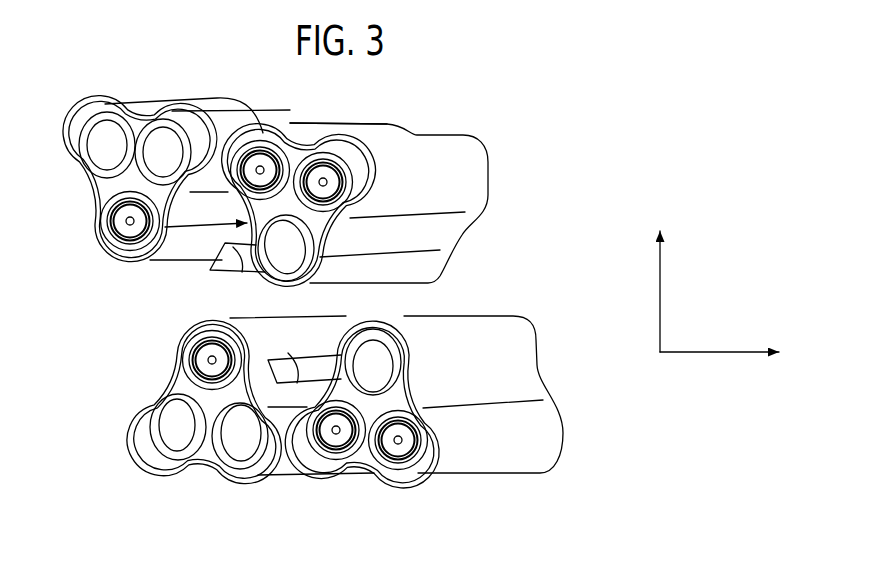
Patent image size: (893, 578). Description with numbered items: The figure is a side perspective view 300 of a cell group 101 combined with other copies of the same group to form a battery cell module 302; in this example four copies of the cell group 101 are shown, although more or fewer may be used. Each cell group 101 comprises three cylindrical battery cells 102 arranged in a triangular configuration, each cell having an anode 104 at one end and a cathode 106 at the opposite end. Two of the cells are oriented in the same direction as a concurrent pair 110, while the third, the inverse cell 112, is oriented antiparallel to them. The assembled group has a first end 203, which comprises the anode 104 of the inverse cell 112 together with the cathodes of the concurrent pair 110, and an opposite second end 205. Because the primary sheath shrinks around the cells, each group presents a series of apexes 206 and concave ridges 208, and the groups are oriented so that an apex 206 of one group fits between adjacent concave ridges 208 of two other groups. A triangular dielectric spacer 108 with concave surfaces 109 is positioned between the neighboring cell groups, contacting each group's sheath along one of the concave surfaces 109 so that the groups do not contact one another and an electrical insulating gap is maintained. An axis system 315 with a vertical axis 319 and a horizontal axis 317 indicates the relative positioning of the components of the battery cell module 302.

The cell group 101 is at (323, 290).
The battery cells 102 is at (133, 147).
The anode 104 is at (112, 221).
The cathode 106 is at (84, 135).
The dielectric spacer 108 is at (208, 270).
The concave surfaces 109 is at (241, 260).
The concurrent pair 110 is at (133, 110).
The inverse cell 112 is at (103, 242).
The first end 203 is at (501, 143).
The second end 205 is at (290, 244).
The apexes 206 is at (468, 308).
The concave ridges 208 is at (196, 207).
The side perspective view 300 is at (684, 54).
The battery cell module 302 is at (588, 156).
The axis system 315 is at (688, 313).
The horizontal axis 317 is at (706, 354).
The vertical axis 319 is at (660, 300).